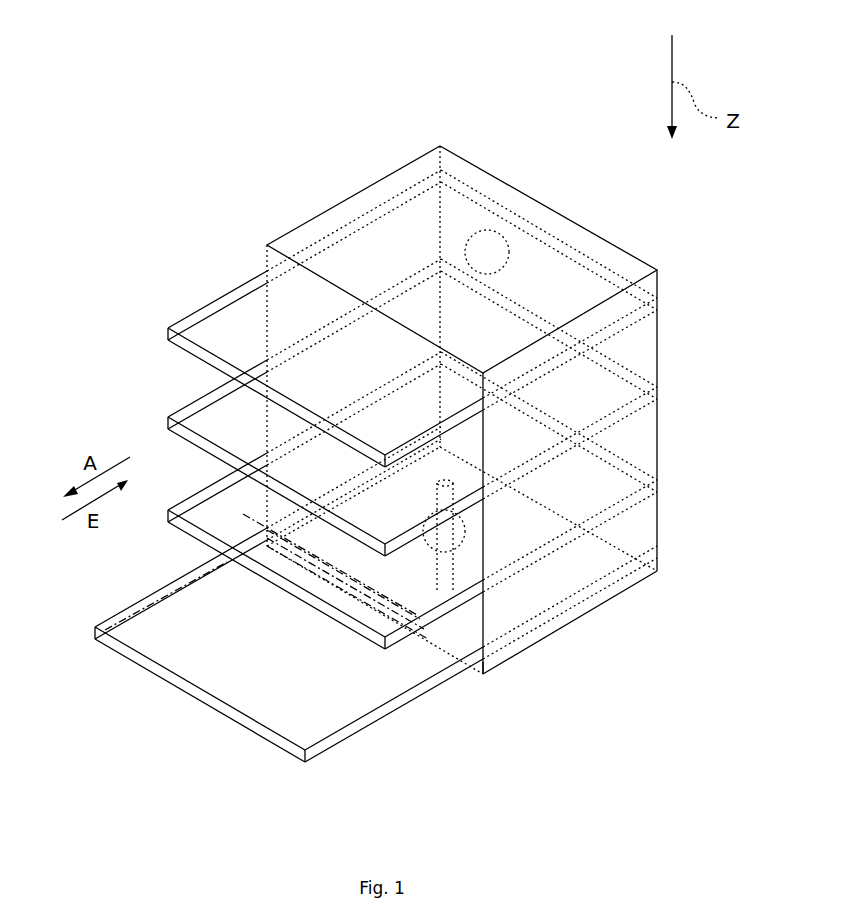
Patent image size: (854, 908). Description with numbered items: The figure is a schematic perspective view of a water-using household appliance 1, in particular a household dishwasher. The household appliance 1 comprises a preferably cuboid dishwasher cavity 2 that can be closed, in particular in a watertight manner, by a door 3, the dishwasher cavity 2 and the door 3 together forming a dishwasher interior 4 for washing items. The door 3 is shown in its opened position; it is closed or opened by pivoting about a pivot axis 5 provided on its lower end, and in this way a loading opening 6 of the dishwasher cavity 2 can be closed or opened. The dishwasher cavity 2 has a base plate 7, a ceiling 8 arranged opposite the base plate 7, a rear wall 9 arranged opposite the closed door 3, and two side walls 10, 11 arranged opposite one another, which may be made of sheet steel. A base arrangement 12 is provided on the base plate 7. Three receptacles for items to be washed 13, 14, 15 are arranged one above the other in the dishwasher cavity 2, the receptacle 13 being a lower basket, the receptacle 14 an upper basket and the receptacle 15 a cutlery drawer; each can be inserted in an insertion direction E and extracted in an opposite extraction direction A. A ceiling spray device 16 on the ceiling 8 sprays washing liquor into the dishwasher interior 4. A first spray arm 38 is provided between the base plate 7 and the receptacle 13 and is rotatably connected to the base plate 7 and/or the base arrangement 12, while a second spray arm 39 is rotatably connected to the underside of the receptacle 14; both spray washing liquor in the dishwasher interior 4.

The water-using household appliance 1 is at (306, 146).
The dishwasher cavity 2 is at (294, 227).
The door 3 is at (165, 607).
The dishwasher interior 4 is at (466, 446).
The pivot axis 5 is at (495, 668).
The loading opening 6 is at (466, 610).
The base plate 7 is at (580, 566).
The ceiling 8 is at (483, 202).
The rear wall 9 is at (643, 465).
The side wall 10 is at (349, 200).
The side wall 11 is at (625, 353).
The base arrangement 12 is at (574, 62).
The receptacle for items to be washed 13 is at (193, 517).
The receptacle for items to be washed 14 is at (195, 423).
The receptacle for items to be washed 15 is at (227, 310).
The ceiling spray device 16 is at (487, 230).
The spray arm 38 is at (439, 592).
The spray arm 39 is at (195, 452).